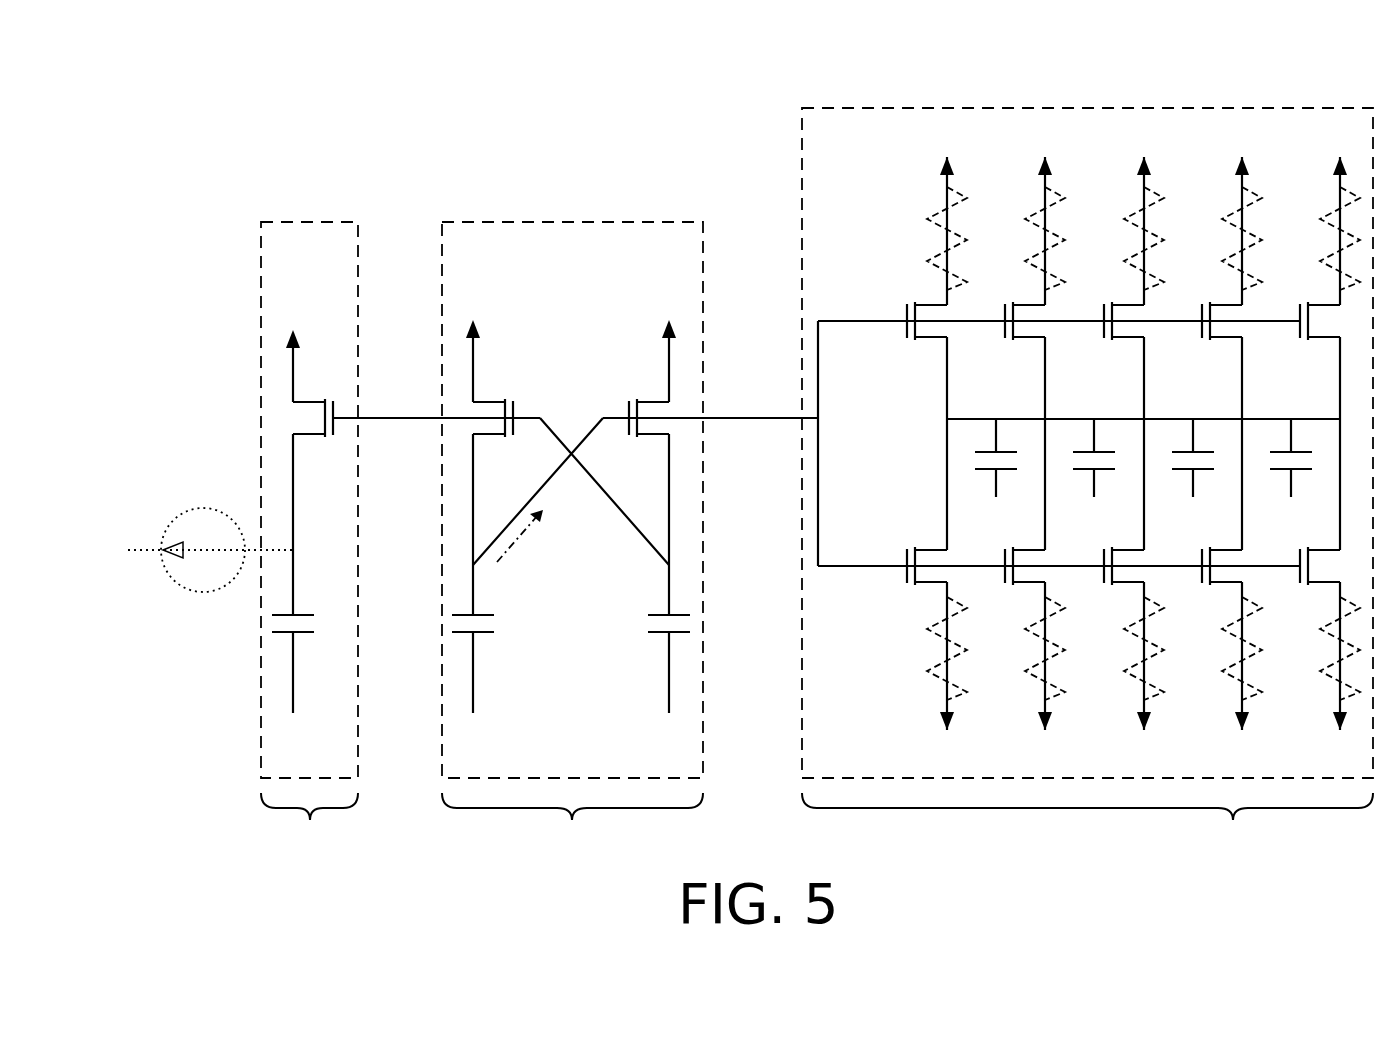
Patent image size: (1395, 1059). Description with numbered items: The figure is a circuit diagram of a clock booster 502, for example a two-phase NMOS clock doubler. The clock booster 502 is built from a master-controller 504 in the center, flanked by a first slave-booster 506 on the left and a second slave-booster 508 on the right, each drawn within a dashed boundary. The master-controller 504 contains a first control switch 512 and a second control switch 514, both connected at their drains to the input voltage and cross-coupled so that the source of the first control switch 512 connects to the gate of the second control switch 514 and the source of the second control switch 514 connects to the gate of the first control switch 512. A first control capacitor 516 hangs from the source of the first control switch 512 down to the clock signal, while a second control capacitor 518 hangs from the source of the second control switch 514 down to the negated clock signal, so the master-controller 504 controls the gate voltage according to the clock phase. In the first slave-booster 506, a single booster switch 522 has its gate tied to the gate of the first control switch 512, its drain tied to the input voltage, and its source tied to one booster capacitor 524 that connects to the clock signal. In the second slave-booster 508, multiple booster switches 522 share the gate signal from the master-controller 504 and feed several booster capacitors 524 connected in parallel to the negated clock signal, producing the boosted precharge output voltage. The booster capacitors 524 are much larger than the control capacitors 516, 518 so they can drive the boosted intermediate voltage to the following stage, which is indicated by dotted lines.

The clock booster 502 is at (415, 66).
The master-controller 504 is at (599, 574).
The first slave-booster 506 is at (760, 492).
The second slave-booster 508 is at (1087, 823).
The first control switch 512 is at (475, 416).
The second control switch 514 is at (650, 400).
The first control capacitor 516 is at (470, 615).
The second control capacitor 518 is at (670, 613).
The booster switch 522 is at (325, 400).
The booster capacitor 524 is at (272, 614).